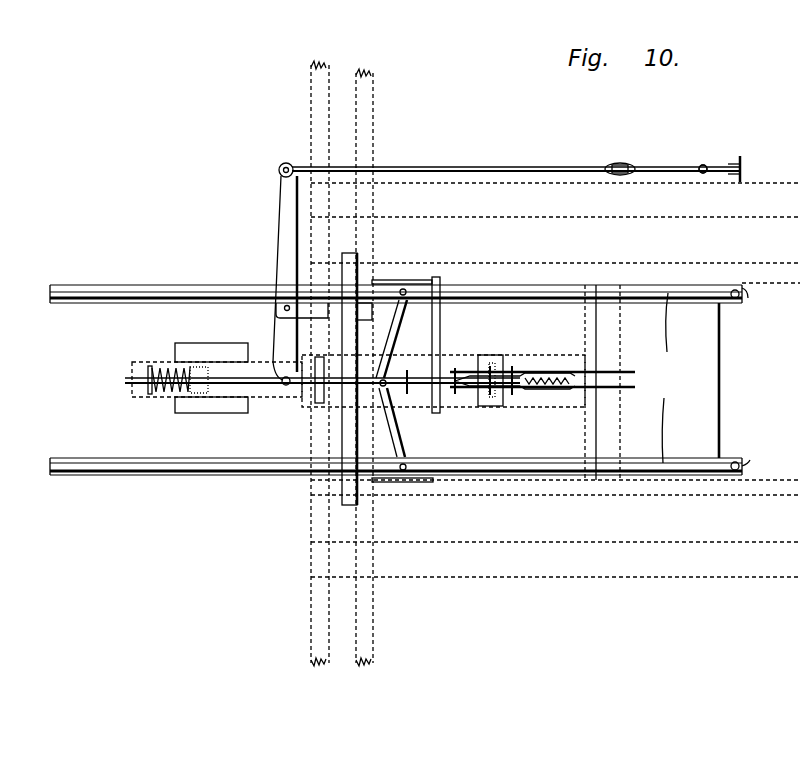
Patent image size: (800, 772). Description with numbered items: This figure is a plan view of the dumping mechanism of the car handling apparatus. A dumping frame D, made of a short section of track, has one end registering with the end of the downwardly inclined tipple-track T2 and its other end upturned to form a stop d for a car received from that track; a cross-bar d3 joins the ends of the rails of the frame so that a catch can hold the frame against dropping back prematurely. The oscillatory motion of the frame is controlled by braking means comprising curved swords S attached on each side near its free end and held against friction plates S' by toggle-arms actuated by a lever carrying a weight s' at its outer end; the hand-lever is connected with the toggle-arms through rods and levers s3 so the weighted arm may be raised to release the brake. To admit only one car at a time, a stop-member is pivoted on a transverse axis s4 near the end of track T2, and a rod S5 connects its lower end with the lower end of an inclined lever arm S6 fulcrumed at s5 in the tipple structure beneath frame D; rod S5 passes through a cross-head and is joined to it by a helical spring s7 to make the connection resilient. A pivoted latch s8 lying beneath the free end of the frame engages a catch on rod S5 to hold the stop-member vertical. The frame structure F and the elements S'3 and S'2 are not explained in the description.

The frame F is at (356, 78).
The tipple-track T2 is at (85, 467).
The cross-bar d3 is at (345, 487).
The dumping frame D is at (688, 378).
The stop d is at (748, 298).
The rods and levers s3 is at (366, 400).
The rod pivot S'3 is at (716, 154).
The rod S5 is at (465, 420).
The weight s' is at (367, 372).
The helical spring s7 is at (168, 394).
The transverse axis s4 is at (200, 368).
The curved swords S is at (410, 353).
The friction plates S' is at (414, 381).
The pivoted latch s8 is at (441, 340).
The fulcrum s5 is at (492, 372).
The fork and spring S'2 is at (515, 357).
The inclined lever arm S6 is at (605, 389).